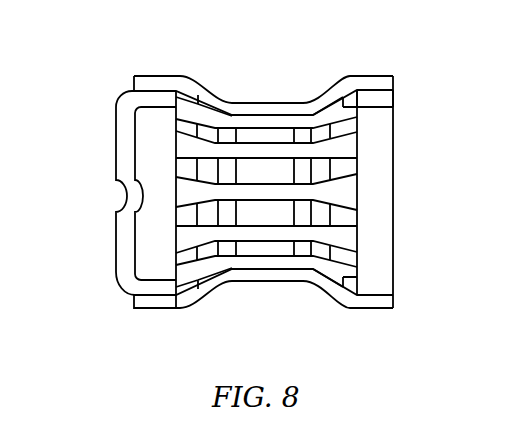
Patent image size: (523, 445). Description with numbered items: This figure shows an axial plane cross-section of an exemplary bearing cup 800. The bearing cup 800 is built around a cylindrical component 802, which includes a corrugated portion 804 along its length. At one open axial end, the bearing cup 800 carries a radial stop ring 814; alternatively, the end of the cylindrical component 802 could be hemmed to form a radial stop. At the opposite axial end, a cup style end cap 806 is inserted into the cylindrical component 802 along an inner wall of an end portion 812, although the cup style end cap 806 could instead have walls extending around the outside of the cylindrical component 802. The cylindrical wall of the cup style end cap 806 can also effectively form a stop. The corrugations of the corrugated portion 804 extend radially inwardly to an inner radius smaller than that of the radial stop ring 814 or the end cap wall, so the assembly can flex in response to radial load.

The bearing cup 800 is at (176, 60).
The cylindrical component 802 is at (340, 76).
The corrugated portion 804 is at (265, 275).
The cup style end cap 806 is at (122, 143).
The end portion 812 is at (137, 293).
The radial stop ring 814 is at (377, 100).